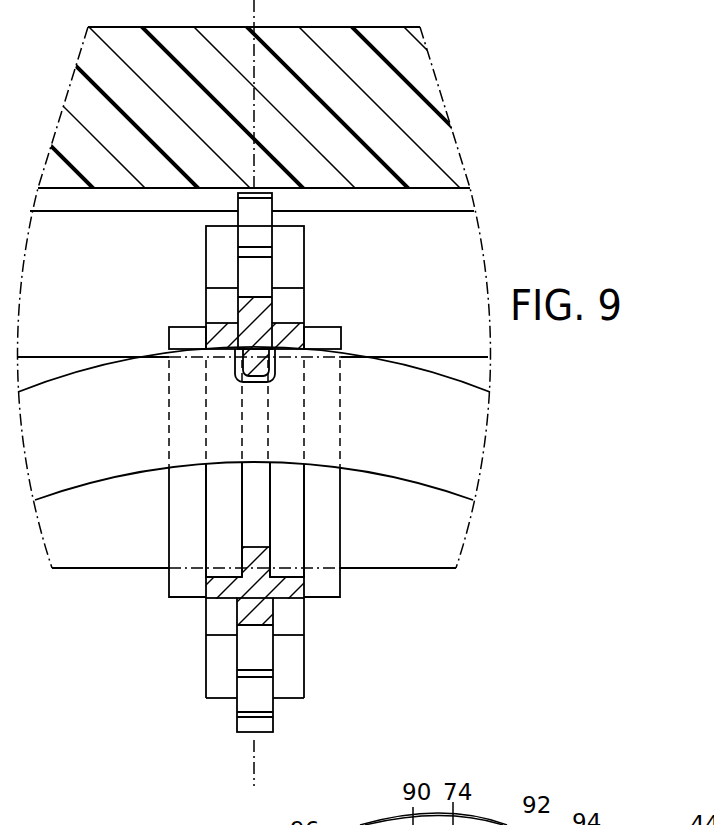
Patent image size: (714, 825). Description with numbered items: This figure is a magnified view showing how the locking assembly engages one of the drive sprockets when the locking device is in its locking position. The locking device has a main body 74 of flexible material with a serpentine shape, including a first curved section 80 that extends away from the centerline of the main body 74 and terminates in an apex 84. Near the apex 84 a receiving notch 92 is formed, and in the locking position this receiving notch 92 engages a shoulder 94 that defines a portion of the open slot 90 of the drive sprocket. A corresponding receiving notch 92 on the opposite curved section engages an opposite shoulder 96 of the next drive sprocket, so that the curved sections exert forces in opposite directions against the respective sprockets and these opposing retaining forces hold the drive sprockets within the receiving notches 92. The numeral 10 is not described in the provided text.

The roller assembly 10 is at (254, 786).
The main body 74 is at (83, 463).
The first curved section 80 is at (145, 390).
The apex 84 is at (183, 347).
The open slot 90 is at (253, 513).
The receiving notch 92 is at (275, 382).
The shoulder 94 is at (258, 368).
The opposite shoulder 96 is at (260, 562).